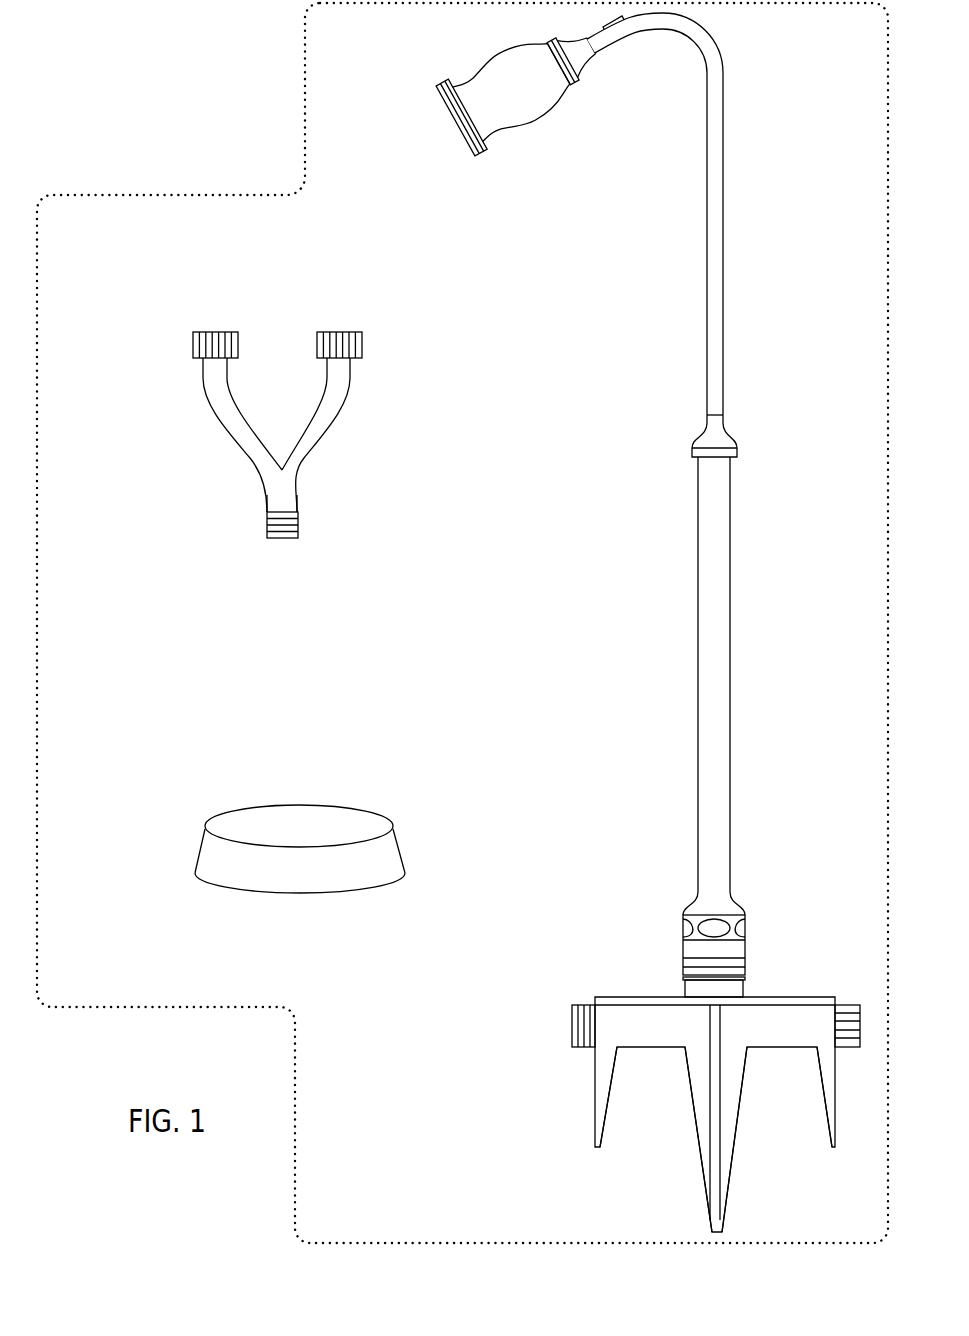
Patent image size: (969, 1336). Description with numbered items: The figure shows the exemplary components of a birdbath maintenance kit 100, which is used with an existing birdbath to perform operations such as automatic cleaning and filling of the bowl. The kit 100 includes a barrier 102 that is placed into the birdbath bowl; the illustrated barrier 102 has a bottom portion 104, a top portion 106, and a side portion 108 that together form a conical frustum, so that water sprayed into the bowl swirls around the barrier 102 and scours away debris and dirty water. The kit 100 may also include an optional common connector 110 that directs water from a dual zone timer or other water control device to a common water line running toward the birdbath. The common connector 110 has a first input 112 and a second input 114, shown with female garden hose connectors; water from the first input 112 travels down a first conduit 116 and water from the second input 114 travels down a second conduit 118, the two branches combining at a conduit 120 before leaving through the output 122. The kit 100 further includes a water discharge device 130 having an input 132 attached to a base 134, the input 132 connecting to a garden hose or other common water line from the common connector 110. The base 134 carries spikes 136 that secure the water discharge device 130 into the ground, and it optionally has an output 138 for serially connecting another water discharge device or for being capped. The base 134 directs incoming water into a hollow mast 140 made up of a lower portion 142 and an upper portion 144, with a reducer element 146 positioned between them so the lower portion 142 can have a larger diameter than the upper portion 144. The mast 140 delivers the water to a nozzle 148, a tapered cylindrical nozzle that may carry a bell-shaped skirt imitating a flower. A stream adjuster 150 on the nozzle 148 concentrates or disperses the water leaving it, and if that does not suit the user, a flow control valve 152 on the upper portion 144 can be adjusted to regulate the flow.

The birdbath maintenance kit 100 is at (224, 128).
The barrier 102 is at (269, 829).
The bottom portion 104 is at (307, 892).
The top portion 106 is at (298, 813).
The side portion 108 is at (208, 857).
The common connector 110 is at (246, 433).
The first input 112 is at (218, 340).
The second input 114 is at (340, 340).
The first conduit 116 is at (213, 388).
The second conduit 118 is at (343, 388).
The conduit 120 is at (278, 492).
The output 122 is at (283, 528).
The water discharge device 130 is at (477, 103).
The input 132 is at (845, 1005).
The base 134 is at (681, 1059).
The spikes 136 is at (605, 1085).
The output 138 is at (572, 1023).
The mast 140 is at (681, 626).
The lower portion 142 is at (698, 674).
The upper portion 144 is at (707, 214).
The reducer element 146 is at (703, 447).
The nozzle 148 is at (513, 89).
The stream adjuster 150 is at (461, 117).
The flow control valve 152 is at (603, 22).